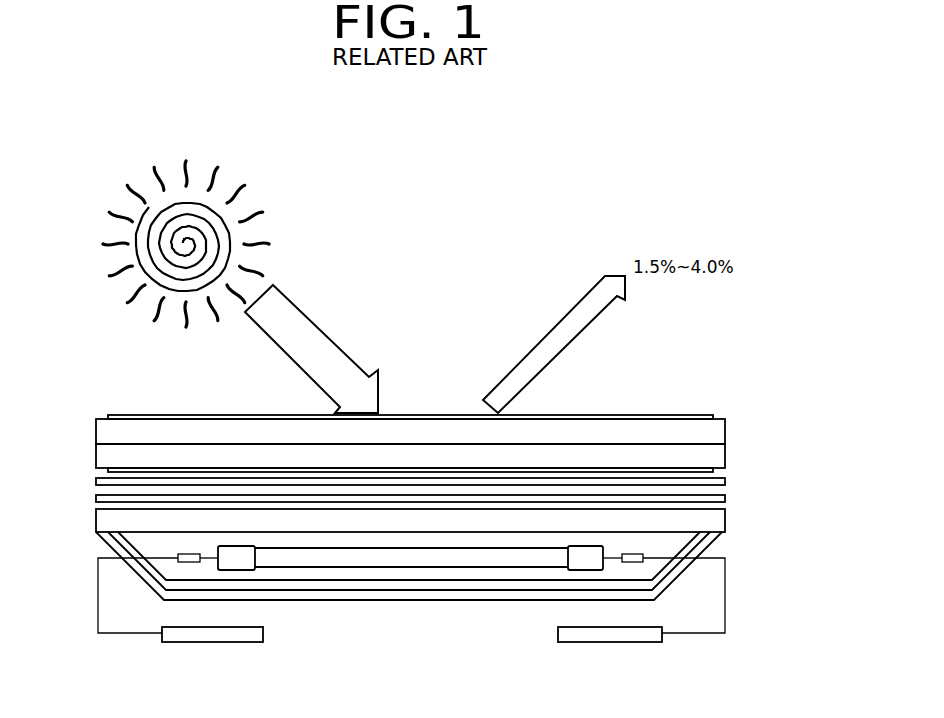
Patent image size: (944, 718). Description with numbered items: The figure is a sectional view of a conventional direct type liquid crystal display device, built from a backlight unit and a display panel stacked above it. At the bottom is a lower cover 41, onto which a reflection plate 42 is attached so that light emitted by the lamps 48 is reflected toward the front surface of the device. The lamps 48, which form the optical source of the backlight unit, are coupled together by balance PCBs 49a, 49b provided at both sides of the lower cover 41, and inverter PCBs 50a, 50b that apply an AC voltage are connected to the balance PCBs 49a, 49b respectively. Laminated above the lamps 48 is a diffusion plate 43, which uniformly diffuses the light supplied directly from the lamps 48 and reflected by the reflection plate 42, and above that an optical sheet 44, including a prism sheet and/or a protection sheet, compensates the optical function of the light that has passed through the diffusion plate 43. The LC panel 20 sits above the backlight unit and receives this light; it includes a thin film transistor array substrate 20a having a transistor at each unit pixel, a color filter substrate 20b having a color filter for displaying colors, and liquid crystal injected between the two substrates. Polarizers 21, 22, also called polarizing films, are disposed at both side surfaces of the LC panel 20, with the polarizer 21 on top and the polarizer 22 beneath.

The polarizer 21 is at (715, 417).
The LC panel 20 is at (463, 445).
The color filter substrate 20b is at (722, 429).
The thin film transistor array substrate 20a is at (722, 457).
The polarizer 22 is at (713, 470).
The optical sheet 44 is at (740, 475).
The diffusion plate 43 is at (722, 522).
The lower cover 41 is at (490, 601).
The reflection plate 42 is at (408, 583).
The lamp 48 is at (345, 562).
The balance PCB 49a is at (188, 562).
The balance PCB 49b is at (634, 562).
The inverter PCB 50a is at (217, 642).
The inverter PCB 50b is at (612, 642).